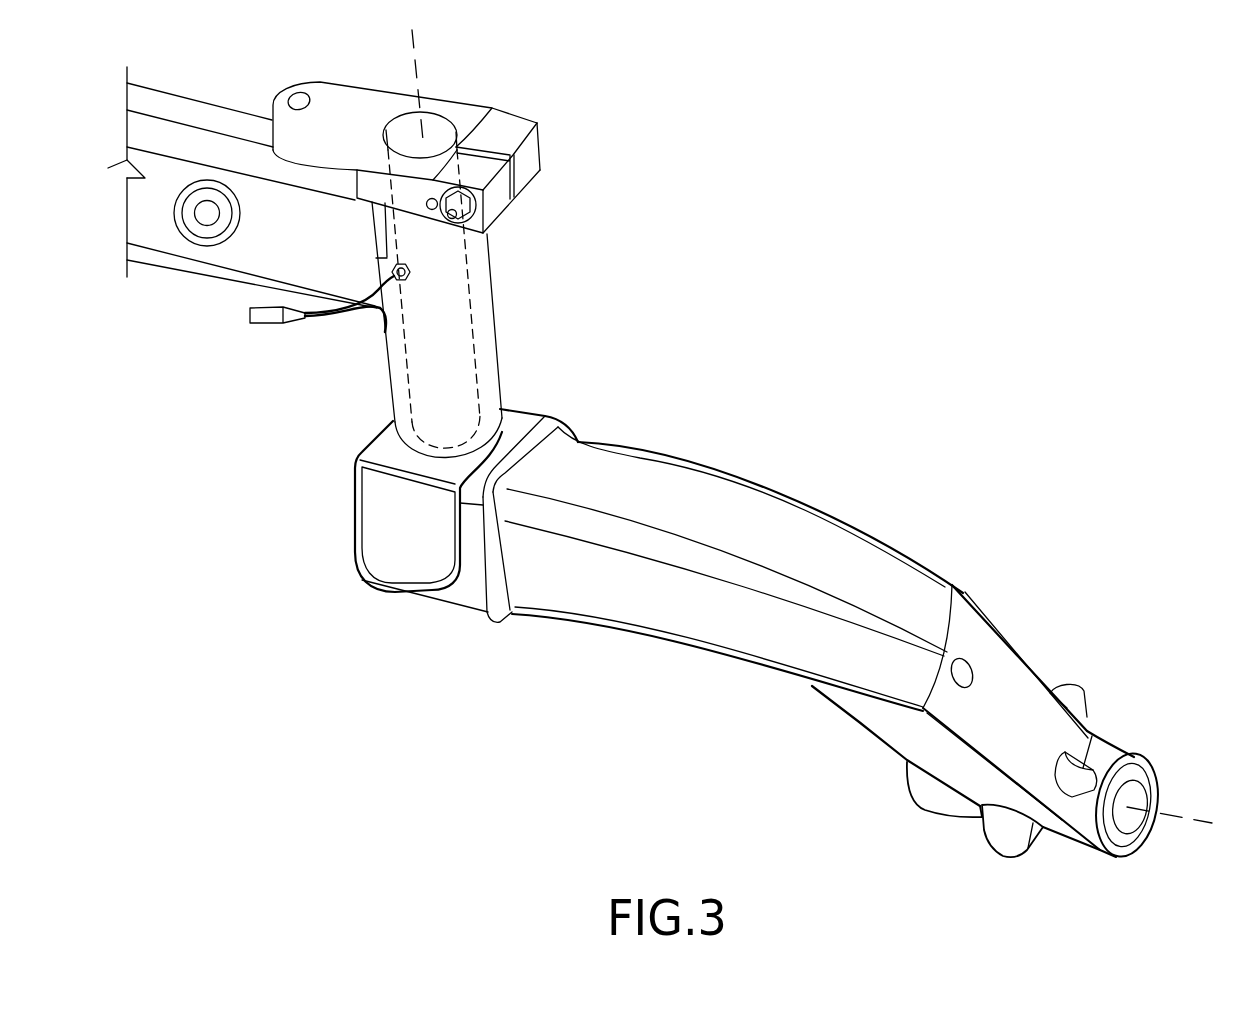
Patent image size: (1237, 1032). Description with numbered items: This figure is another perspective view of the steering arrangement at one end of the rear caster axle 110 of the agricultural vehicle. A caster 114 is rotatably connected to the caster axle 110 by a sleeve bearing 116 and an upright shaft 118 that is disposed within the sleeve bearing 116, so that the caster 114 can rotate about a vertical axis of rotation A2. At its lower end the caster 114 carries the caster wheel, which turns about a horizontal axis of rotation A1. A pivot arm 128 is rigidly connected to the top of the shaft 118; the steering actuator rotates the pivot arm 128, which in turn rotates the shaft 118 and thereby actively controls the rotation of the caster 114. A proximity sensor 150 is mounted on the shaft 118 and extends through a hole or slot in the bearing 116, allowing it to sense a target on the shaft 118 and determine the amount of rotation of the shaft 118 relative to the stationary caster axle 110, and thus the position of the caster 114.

The rear caster axle 110 is at (190, 273).
The caster 114 is at (937, 590).
The sleeve bearing 116 is at (488, 283).
The upright shaft 118 is at (477, 347).
The pivot arm 128 is at (343, 100).
The proximity sensor 150 is at (316, 322).
The horizontal axis of rotation A1 is at (1197, 822).
The vertical axis of rotation A2 is at (413, 47).